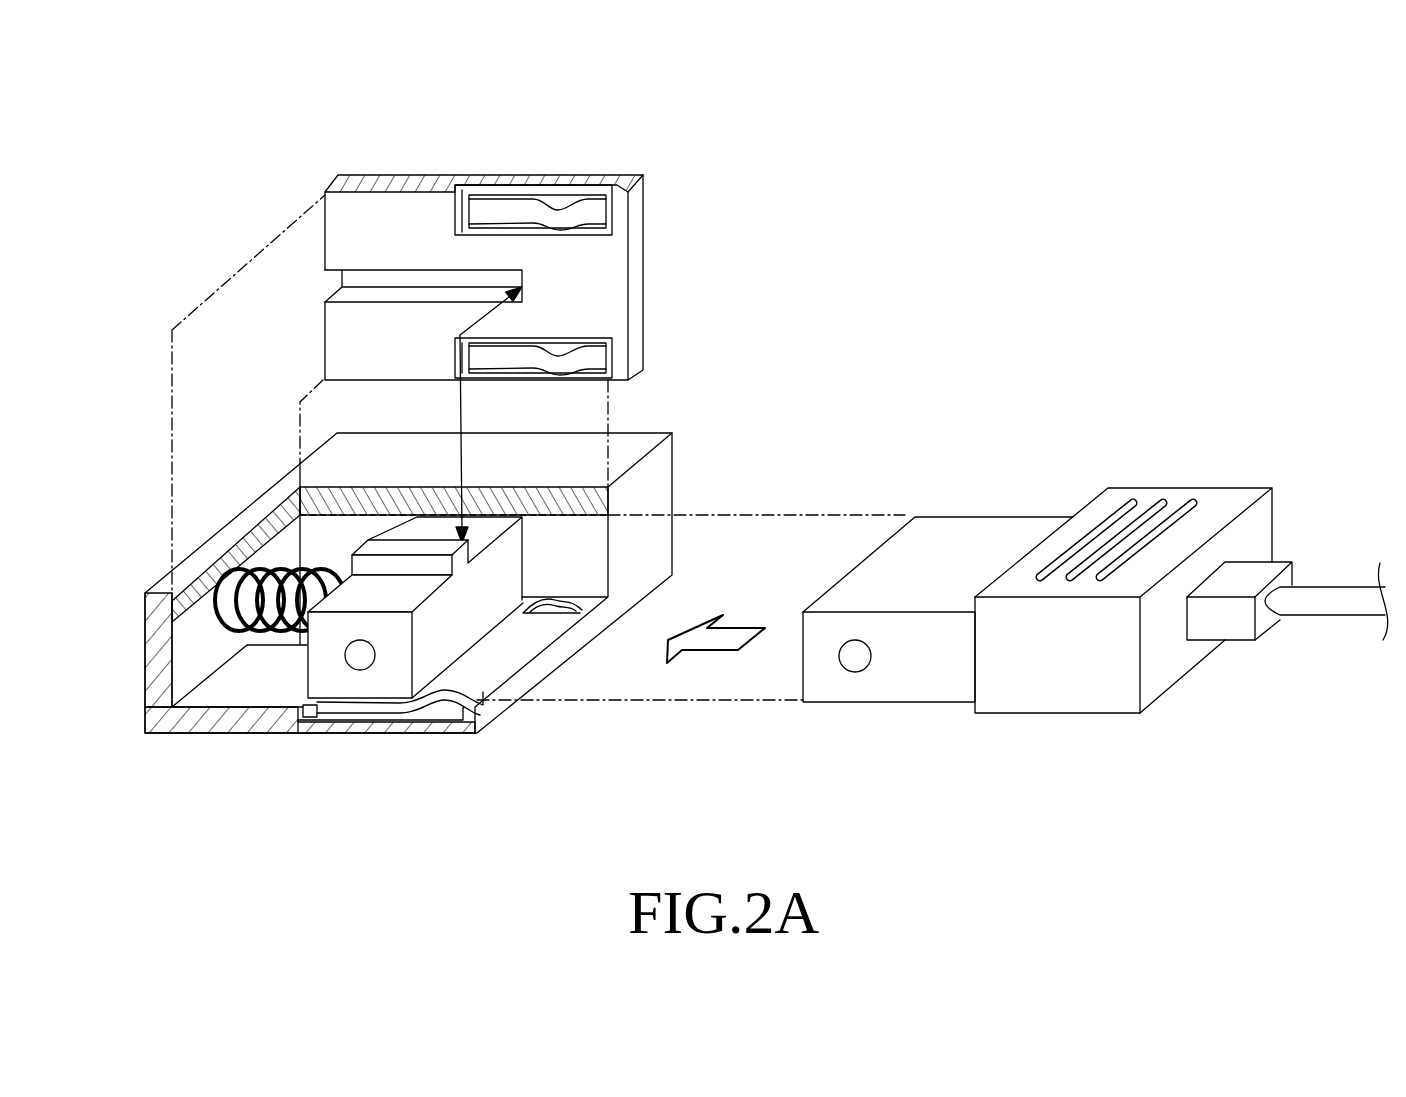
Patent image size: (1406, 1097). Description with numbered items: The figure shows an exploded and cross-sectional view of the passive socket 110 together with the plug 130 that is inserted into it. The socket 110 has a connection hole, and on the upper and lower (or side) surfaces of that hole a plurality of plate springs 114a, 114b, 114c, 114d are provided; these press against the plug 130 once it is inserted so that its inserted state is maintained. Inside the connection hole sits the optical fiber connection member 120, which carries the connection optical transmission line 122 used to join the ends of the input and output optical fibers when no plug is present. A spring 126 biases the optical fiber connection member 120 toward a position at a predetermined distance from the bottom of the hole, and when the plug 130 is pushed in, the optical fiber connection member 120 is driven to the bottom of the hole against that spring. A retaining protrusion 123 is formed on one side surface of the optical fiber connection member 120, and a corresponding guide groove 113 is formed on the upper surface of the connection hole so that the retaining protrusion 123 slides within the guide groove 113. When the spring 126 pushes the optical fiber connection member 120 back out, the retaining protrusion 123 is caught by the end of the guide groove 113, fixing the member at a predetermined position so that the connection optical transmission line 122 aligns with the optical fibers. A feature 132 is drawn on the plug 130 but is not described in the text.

The socket 110 is at (657, 481).
The guide groove 113 is at (355, 281).
The plate spring 114a is at (508, 203).
The plate spring 114b is at (593, 356).
The plate spring 114c is at (446, 702).
The plate spring 114d is at (578, 615).
The optical fiber connection member 120 is at (322, 667).
The connection optical transmission line 122 is at (360, 660).
The retaining protrusion 123 is at (433, 563).
The spring 126 is at (242, 566).
The plug 130 is at (1114, 462).
The plug hole 132 is at (853, 660).